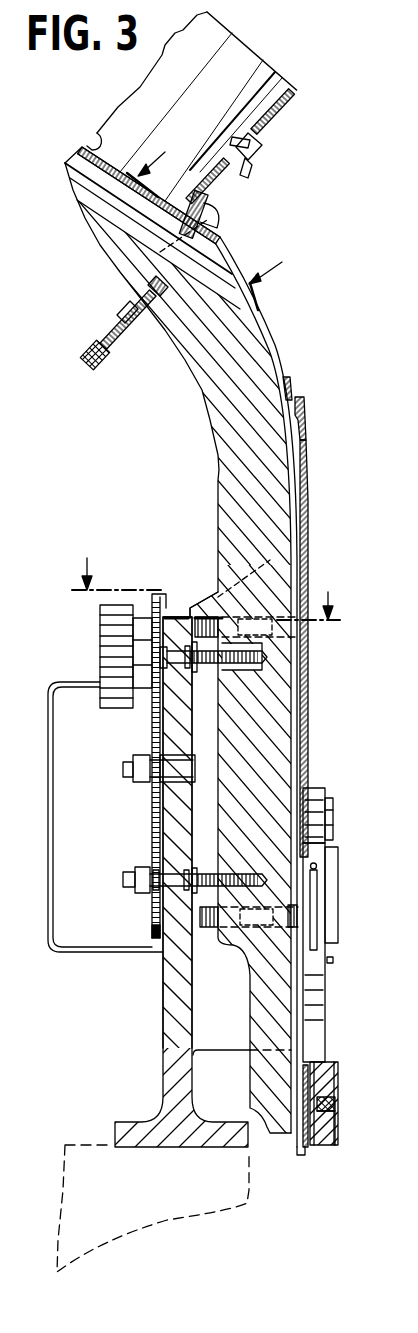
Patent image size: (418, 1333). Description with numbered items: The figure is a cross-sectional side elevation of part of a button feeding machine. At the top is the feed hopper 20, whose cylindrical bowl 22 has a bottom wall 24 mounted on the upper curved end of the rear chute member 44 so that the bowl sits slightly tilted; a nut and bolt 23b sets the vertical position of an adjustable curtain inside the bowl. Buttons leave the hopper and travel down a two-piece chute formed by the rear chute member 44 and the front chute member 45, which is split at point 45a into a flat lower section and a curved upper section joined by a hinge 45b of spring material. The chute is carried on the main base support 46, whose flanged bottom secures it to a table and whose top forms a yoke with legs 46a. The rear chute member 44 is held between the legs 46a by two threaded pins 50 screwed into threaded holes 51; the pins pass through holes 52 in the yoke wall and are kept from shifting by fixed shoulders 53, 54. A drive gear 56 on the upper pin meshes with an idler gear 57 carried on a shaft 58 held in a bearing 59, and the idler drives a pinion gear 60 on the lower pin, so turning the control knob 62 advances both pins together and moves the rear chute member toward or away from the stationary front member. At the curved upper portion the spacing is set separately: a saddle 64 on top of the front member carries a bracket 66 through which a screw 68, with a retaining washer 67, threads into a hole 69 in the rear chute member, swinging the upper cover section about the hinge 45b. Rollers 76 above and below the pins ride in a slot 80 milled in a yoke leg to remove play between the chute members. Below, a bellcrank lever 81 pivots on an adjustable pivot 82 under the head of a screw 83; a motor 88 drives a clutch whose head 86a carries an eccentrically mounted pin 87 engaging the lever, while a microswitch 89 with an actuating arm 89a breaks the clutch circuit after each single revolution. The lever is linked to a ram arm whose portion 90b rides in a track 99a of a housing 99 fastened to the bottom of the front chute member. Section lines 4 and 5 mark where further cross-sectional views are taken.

The feed hopper 20 is at (301, 72).
The cylindrical bowl 22 is at (223, 65).
The nut and bolt 23b is at (262, 150).
The bottom wall 24 is at (88, 138).
The rear chute member 44 is at (203, 378).
The front chute member 45 is at (288, 346).
The split 45a is at (308, 500).
The hinge 45b is at (306, 425).
The main base support 46 is at (170, 1070).
The yoke legs 46a is at (214, 592).
The threaded pin 50 is at (264, 649).
The threaded hole 51 is at (241, 673).
The hole 52 is at (170, 616).
The shoulder 53 is at (193, 674).
The shoulder 54 is at (170, 668).
The drive gear 56 is at (155, 593).
The idler gear 57 is at (163, 745).
The shaft 58 is at (123, 769).
The bearing 59 is at (178, 778).
The drive pinion gear 60 is at (150, 931).
The control knob 62 is at (113, 630).
The saddle 64 is at (221, 218).
The bracket 66 is at (142, 326).
The retaining washer 67 is at (113, 324).
The screw 68 is at (80, 352).
The hole 69 is at (150, 283).
The roller 76 is at (298, 630).
The slot 80 is at (206, 928).
The bellcrank lever 81 is at (328, 1040).
The adjustable pivot 82 is at (312, 797).
The screw 83 is at (334, 810).
The clutch head 86a is at (317, 997).
The eccentrically mounted pin 87 is at (334, 960).
The motor 88 is at (63, 853).
The microswitch 89 is at (339, 858).
The actuating arm 89a is at (316, 902).
The ram arm portion 90b is at (335, 1102).
The housing 99 is at (338, 1075).
The track 99a is at (326, 1113).
The section line 4- 4 is at (214, 216).
The section line 5- 5 is at (206, 569).